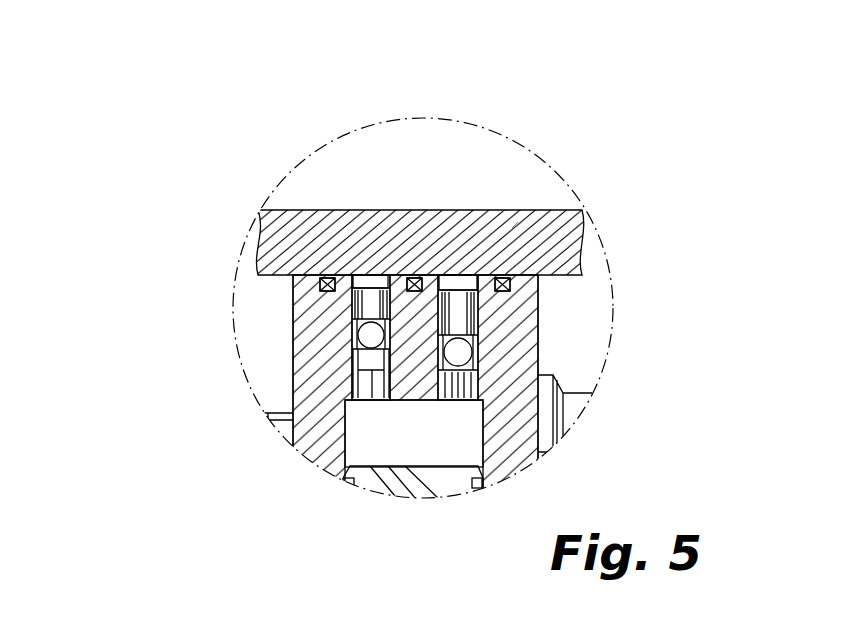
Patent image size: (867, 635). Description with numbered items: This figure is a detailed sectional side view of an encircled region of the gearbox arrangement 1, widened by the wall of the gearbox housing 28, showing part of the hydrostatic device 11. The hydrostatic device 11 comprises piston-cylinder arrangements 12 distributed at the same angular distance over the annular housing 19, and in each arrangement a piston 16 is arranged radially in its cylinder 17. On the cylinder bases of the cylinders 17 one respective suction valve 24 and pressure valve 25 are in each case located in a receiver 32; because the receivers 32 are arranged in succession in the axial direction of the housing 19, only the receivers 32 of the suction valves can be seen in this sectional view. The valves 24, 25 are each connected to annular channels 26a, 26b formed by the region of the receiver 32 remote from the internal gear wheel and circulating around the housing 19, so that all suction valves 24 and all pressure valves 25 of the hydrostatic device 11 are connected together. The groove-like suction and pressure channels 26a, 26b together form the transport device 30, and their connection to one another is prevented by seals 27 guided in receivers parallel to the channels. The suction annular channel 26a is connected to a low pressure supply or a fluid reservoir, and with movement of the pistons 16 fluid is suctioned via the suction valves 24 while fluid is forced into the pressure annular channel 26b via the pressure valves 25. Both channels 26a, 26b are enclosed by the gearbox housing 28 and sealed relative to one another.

The gearbox arrangement 1 is at (680, 228).
The hydrostatic device 11 is at (170, 207).
The piston-cylinder arrangement 12 is at (244, 502).
The piston 16 is at (430, 483).
The cylinder 17 is at (467, 450).
The annular housing 19 is at (325, 450).
The suction valve 24 is at (377, 303).
The pressure valve 25 is at (452, 323).
The suction annular channel 26a is at (377, 292).
The pressure annular channel 26b is at (464, 300).
The seal 27 is at (423, 278).
The gearbox housing 28 is at (514, 224).
The transport device 30 is at (188, 307).
The receiver 32 is at (350, 368).